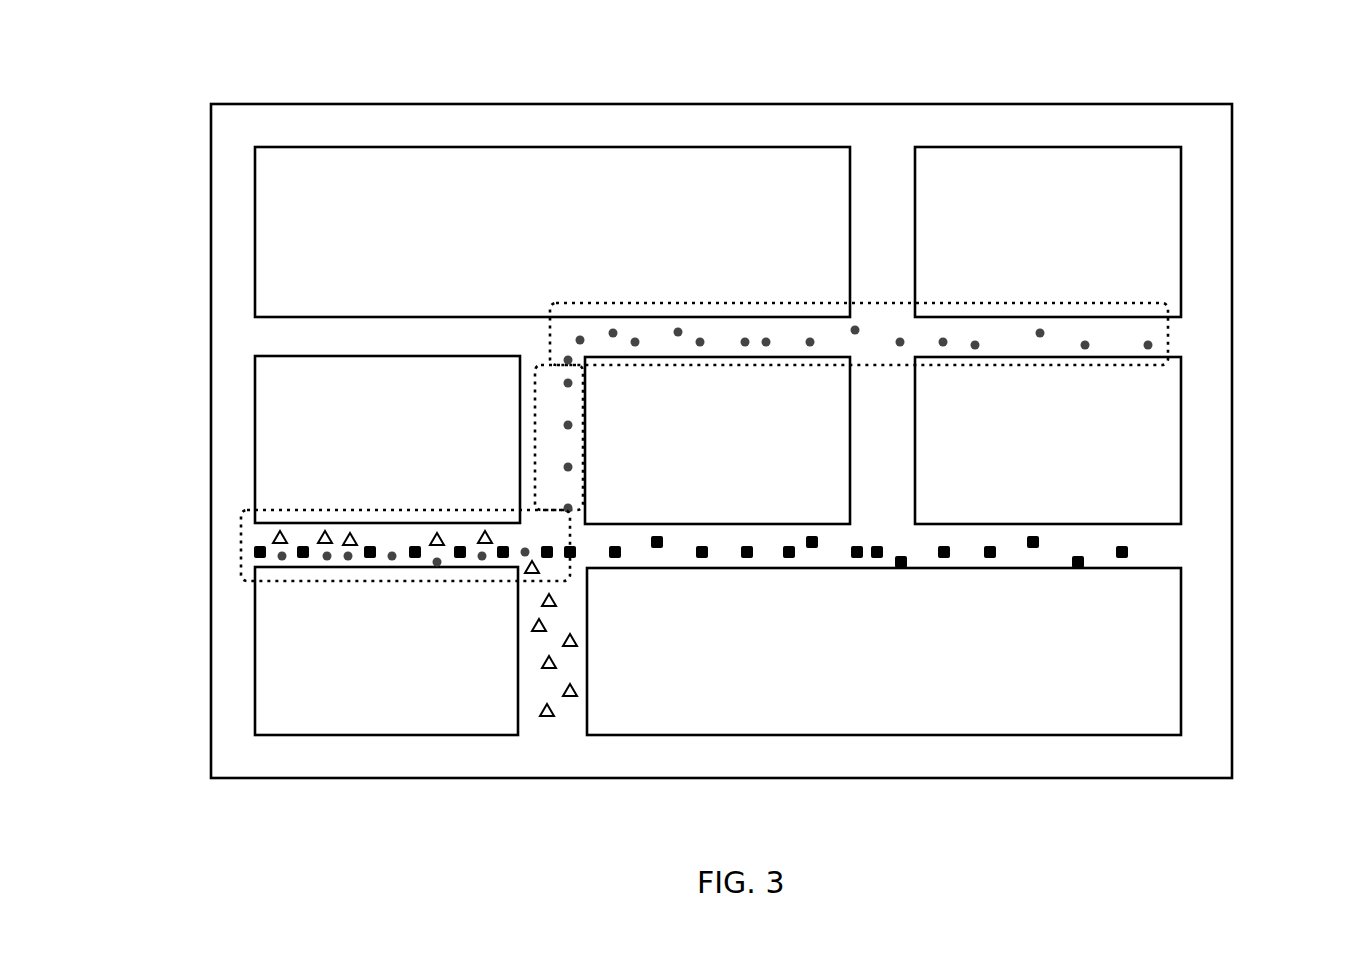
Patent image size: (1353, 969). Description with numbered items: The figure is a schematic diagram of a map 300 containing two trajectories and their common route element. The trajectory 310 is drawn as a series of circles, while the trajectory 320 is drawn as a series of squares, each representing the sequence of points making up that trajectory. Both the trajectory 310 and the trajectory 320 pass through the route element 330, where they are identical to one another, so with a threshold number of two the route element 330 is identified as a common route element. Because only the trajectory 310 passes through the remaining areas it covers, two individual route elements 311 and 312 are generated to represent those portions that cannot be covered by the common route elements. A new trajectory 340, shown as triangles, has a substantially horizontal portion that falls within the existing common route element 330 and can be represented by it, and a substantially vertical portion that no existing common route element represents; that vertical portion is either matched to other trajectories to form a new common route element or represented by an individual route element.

The map 300 is at (722, 75).
The trajectory 310 is at (1190, 338).
The individual route element 311 is at (535, 463).
The individual route element 312 is at (653, 303).
The trajectory 320 is at (1190, 540).
The route element 330 is at (242, 548).
The new trajectory 340 is at (595, 612).